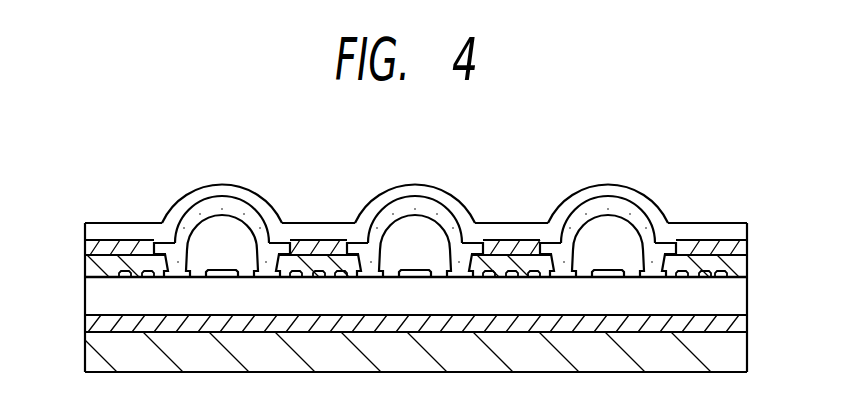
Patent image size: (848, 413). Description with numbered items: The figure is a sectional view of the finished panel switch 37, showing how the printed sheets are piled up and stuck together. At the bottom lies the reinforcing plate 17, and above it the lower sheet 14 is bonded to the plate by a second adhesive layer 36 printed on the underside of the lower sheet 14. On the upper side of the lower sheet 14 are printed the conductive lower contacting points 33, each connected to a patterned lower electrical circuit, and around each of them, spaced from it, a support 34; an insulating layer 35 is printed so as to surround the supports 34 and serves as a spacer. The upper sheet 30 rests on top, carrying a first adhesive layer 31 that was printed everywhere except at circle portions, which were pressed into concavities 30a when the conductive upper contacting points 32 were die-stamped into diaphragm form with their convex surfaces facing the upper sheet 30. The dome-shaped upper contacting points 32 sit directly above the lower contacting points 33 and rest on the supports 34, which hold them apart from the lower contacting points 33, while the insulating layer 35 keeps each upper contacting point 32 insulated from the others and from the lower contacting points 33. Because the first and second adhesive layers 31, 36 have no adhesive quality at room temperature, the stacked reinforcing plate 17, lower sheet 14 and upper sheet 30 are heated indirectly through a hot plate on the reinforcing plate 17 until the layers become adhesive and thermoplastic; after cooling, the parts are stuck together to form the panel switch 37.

The lower sheet 14 is at (733, 300).
The reinforcing plate 17 is at (733, 358).
The upper sheet 30 is at (737, 232).
The concavities 30a is at (640, 198).
The first adhesive layer 31 is at (737, 250).
The upper contacting points 32 is at (645, 227).
The lower contacting points 33 is at (607, 271).
The supports 34 is at (547, 250).
The insulating layer 35 is at (737, 263).
The second adhesive layer 36 is at (740, 330).
The panel switch 37 is at (81, 254).